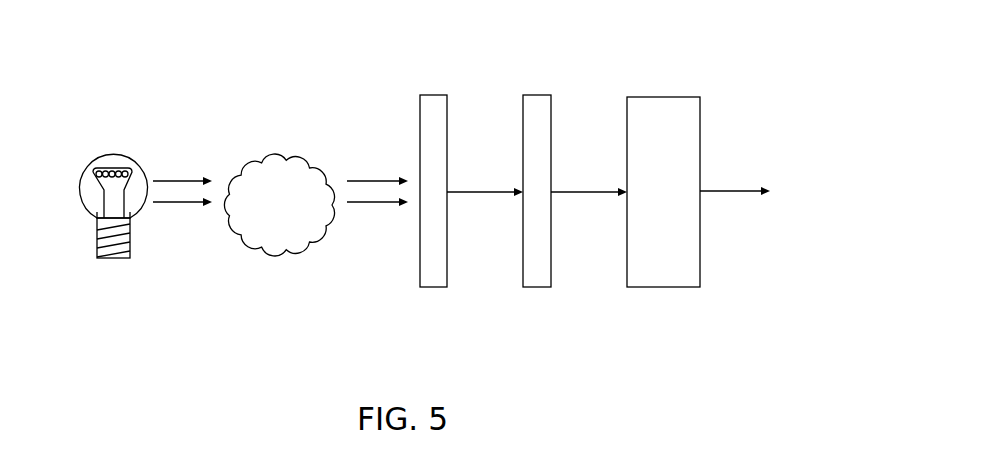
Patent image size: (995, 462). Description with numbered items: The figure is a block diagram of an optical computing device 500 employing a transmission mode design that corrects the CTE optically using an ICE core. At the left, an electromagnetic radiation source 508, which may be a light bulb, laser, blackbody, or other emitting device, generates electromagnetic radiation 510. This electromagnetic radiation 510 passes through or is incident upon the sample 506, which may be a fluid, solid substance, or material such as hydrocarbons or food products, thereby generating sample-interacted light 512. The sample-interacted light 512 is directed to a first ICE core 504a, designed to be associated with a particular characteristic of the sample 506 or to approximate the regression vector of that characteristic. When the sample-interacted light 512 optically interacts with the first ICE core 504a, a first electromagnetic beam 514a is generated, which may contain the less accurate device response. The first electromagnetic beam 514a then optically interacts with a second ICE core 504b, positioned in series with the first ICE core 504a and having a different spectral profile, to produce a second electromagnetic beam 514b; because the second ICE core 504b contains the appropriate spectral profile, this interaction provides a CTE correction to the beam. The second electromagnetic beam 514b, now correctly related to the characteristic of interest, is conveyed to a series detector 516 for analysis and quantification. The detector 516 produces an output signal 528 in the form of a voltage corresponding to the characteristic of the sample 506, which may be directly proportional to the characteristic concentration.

The optical computing device 500 is at (592, 40).
The first ICE core 504a is at (435, 95).
The second ICE core 504b is at (538, 95).
The sample 506 is at (305, 215).
The electromagnetic radiation source 508 is at (110, 150).
The electromagnetic radiation 510 is at (170, 180).
The sample-interacted light 512 is at (377, 180).
The first electromagnetic beam 514a is at (480, 192).
The second electromagnetic beam 514b is at (582, 192).
The detector 516 is at (690, 205).
The output signal 528 is at (718, 190).